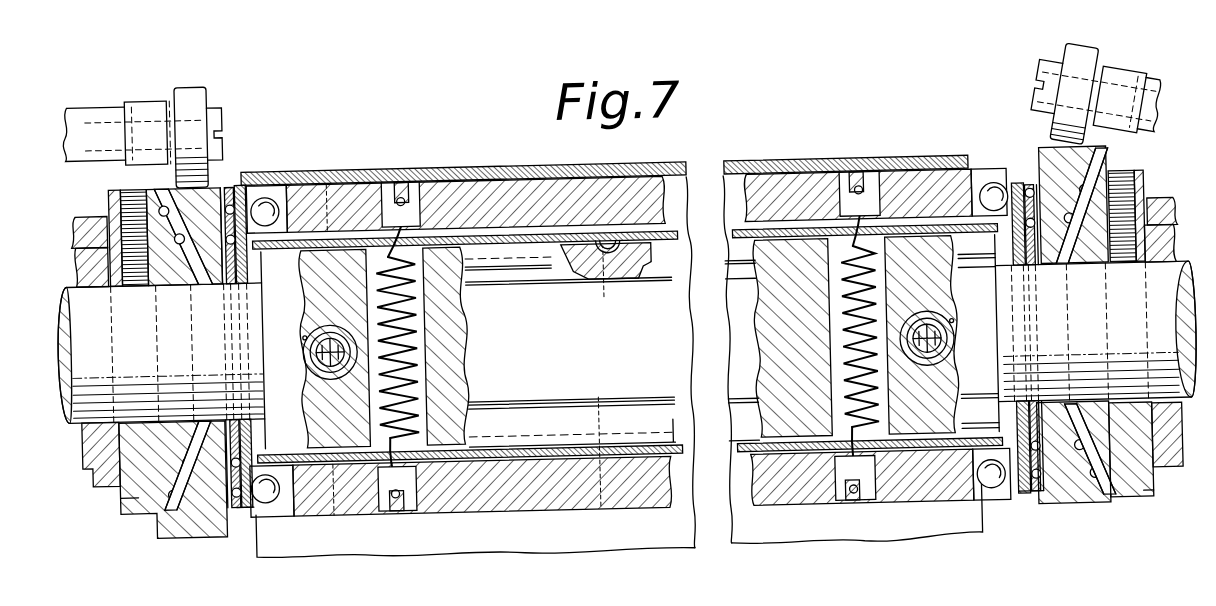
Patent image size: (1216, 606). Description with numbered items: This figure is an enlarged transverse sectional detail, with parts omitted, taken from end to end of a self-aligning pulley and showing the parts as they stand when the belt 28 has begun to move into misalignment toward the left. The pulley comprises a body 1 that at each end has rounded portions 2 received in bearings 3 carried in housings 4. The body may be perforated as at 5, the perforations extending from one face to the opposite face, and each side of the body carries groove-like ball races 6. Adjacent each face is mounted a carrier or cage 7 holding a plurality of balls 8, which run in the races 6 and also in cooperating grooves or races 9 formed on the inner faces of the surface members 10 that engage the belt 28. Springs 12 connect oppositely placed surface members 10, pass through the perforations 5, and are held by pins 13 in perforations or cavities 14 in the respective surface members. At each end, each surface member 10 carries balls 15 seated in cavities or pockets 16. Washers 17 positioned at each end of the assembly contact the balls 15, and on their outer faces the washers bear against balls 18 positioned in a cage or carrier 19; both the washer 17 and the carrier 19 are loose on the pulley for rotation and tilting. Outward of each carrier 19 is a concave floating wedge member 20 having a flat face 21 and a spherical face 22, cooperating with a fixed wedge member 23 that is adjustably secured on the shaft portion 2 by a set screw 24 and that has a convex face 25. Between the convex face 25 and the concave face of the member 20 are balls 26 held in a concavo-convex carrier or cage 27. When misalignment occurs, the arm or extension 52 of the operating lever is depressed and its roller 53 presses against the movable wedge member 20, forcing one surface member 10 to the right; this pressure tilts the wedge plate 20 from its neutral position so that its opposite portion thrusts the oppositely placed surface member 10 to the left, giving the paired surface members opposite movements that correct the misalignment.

The body 1 is at (760, 329).
The rounded portions 2 is at (80, 304).
The bearings 3 is at (80, 255).
The housings 4 is at (82, 206).
The perforations 5 is at (310, 328).
The ball races 6 is at (568, 282).
The carrier or cage 7 is at (736, 237).
The balls 8 is at (333, 170).
The grooves or races 9 is at (670, 201).
The surface members 10 is at (560, 185).
The springs 12 is at (318, 344).
The pins 13 is at (410, 192).
The perforations or cavities 14 is at (398, 183).
The balls 15 is at (268, 190).
The cavities or pockets 16 is at (286, 190).
The washers 17 is at (244, 176).
The balls 18 is at (224, 230).
The cage or carrier 19 is at (233, 180).
The floating wedge member 20 is at (190, 518).
The flat face 21 is at (238, 506).
The spherical face 22 is at (165, 503).
The fixed wedge member 23 is at (100, 458).
The set screw 24 is at (118, 186).
The convex face 25 is at (125, 487).
The balls 26 is at (180, 236).
The carrier or cage 27 is at (160, 185).
The belt 28 is at (500, 164).
The arm or extension 52 is at (95, 102).
The roller 53 is at (198, 90).